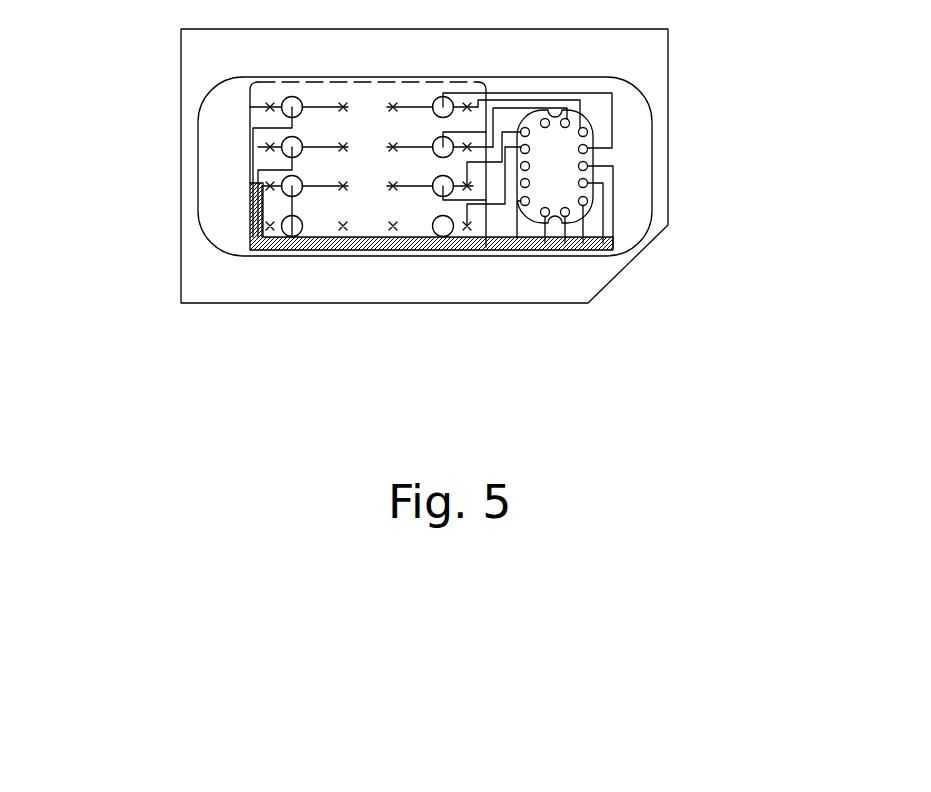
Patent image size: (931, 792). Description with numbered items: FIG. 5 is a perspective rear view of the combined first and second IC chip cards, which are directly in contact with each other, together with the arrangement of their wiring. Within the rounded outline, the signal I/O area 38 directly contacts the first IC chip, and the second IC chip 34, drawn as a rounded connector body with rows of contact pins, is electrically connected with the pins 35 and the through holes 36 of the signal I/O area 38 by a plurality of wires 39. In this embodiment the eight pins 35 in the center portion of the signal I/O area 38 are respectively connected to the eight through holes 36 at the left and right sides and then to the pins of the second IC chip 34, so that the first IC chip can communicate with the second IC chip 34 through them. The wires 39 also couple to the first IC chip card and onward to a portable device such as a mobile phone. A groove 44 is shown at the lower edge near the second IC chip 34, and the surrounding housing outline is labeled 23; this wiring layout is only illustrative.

The housing 23 is at (637, 258).
The second IC chip 34 is at (567, 163).
The pins 35 is at (293, 193).
The through holes 36 is at (270, 232).
The signal I/O area 38 is at (200, 104).
The wires 39 is at (248, 202).
The groove 44 is at (553, 225).